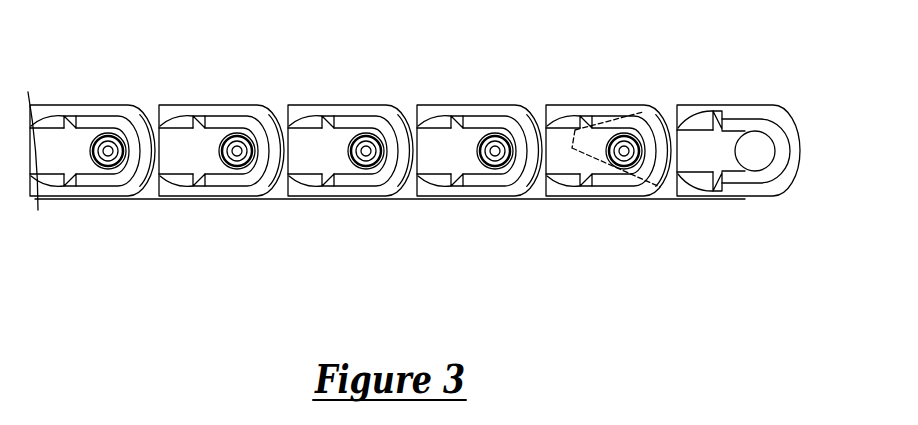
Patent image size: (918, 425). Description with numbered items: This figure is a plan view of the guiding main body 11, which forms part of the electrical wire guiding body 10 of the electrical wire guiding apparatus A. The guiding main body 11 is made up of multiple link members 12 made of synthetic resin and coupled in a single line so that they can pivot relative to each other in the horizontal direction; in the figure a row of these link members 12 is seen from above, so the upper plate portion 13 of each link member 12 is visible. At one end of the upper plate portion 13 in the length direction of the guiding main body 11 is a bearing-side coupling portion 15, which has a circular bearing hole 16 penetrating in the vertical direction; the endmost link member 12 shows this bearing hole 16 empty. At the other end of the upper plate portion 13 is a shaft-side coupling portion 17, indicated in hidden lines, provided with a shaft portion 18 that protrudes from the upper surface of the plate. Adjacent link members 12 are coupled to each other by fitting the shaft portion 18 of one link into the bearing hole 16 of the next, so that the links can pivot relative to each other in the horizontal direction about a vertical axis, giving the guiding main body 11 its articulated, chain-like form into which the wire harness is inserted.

The electrical wire guiding body 10 is at (434, 144).
The guiding main body 11 is at (487, 69).
The link member 12 is at (720, 154).
The upper plate portion 13 is at (700, 157).
The bearing-side coupling portion 15 is at (771, 117).
The bearing hole 16 is at (777, 148).
The shaft-side coupling portion 17 is at (572, 148).
The shaft portion 18 is at (627, 136).
The electrical wire guiding apparatus A is at (763, 40).